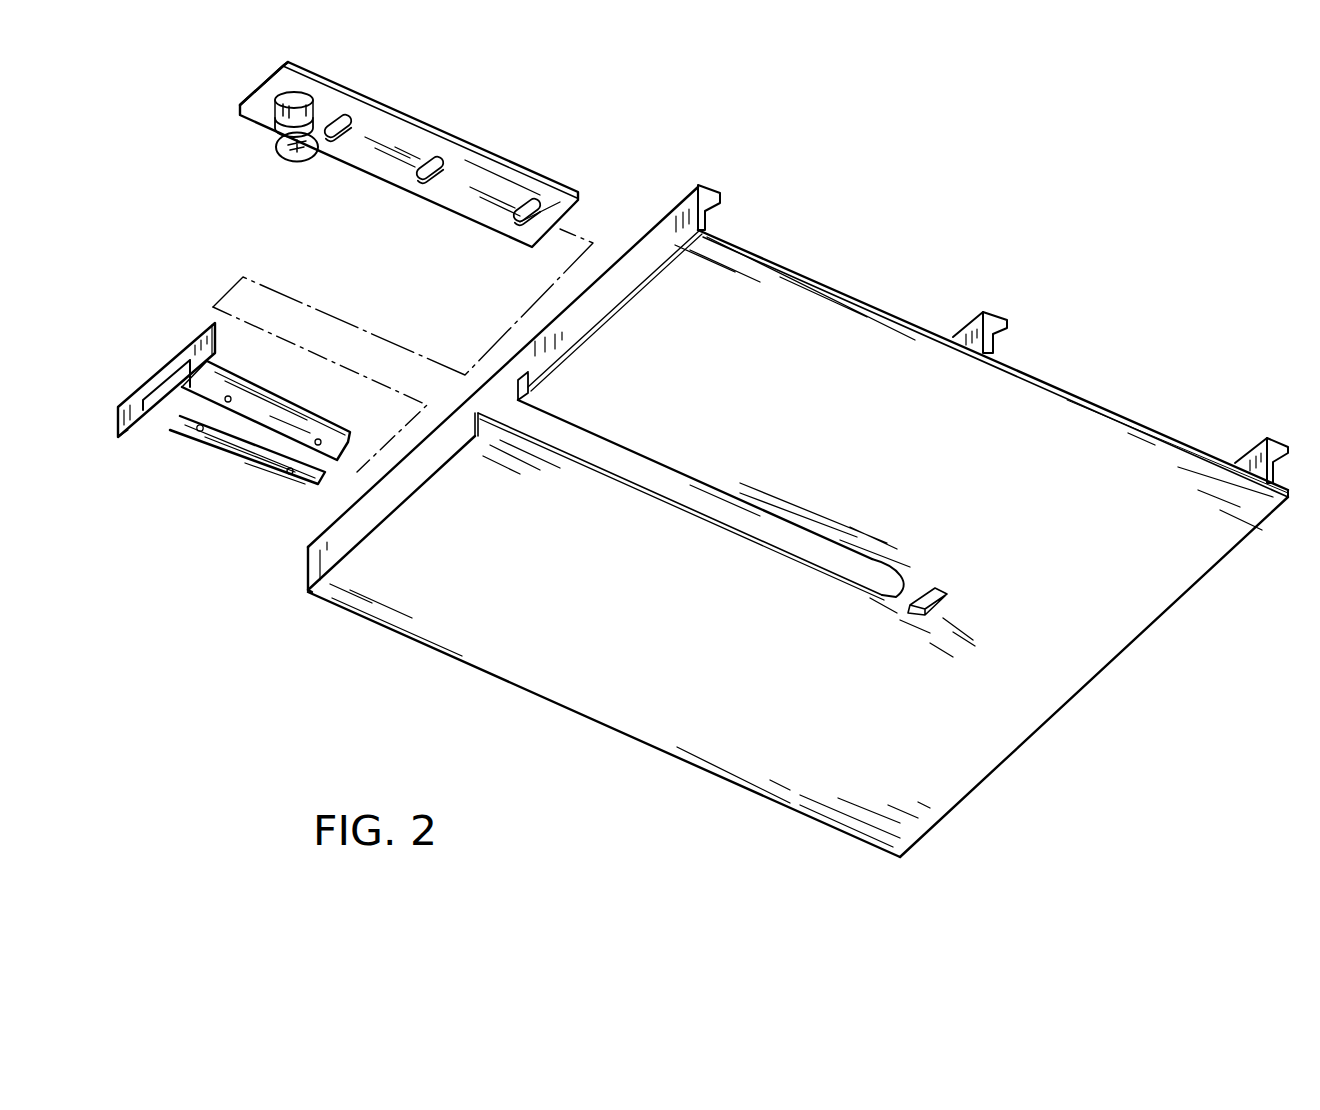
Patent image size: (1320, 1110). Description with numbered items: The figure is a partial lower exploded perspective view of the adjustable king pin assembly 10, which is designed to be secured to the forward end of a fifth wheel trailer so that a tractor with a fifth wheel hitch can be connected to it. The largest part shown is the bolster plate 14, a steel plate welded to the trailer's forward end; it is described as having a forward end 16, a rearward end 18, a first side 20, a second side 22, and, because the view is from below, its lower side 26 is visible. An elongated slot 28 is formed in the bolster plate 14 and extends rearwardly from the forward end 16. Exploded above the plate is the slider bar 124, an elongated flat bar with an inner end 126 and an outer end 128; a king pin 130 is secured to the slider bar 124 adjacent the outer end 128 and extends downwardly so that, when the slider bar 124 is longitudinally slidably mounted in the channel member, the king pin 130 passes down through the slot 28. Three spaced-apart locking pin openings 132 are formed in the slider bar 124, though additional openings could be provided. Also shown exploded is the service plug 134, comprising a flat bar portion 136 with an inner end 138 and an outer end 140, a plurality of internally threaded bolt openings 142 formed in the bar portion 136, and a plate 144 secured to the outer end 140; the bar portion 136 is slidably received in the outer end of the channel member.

The adjustable king pin assembly 10 is at (833, 224).
The bolster plate 14 is at (905, 303).
The forward end 16 is at (313, 530).
The rearward end 18 is at (1067, 722).
The first side 20 is at (1128, 403).
The second side 22 is at (653, 762).
The lower side 26 is at (798, 628).
The elongated slot 28 is at (643, 463).
The slider bar 124 is at (497, 138).
The inner end 126 is at (568, 212).
The outer end 128 is at (272, 80).
The king pin 130 is at (287, 157).
The locking pin openings 132 is at (517, 222).
The service plug 134 is at (193, 320).
The flat bar portion 136 is at (300, 417).
The inner end 138 is at (327, 477).
The outer end 140 is at (162, 350).
The internally threaded bolt openings 142 is at (198, 432).
The plate 144 is at (140, 425).